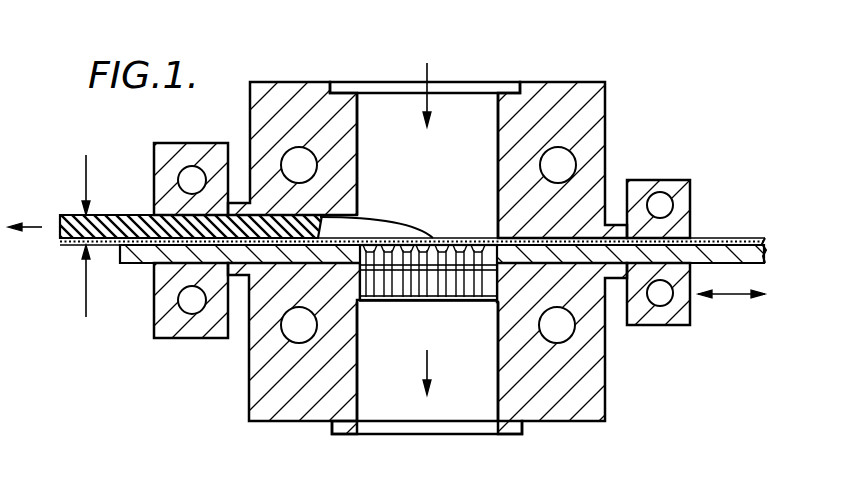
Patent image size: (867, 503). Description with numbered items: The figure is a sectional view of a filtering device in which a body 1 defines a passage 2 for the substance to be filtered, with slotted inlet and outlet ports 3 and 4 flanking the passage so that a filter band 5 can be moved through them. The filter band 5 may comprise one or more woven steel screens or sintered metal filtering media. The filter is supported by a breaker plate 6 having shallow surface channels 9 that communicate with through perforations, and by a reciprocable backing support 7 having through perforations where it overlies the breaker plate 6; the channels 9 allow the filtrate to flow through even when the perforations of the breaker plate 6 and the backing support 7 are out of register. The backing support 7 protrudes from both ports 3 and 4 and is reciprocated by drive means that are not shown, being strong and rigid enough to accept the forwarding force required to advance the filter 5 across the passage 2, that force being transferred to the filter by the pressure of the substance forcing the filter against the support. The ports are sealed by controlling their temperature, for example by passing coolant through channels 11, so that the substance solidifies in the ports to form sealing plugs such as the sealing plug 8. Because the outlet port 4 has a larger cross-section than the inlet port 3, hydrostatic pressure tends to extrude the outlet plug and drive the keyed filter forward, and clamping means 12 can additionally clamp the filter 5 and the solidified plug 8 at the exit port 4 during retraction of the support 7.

The body 1 is at (547, 93).
The passage 2 is at (457, 107).
The inlet port 3 is at (673, 185).
The outlet port 4 is at (156, 177).
The filter band 5 is at (719, 240).
The breaker plate 6 is at (408, 285).
The reciprocable backing support 7 is at (137, 258).
The sealing plug 8 is at (68, 213).
The shallow surface channels 9 is at (460, 291).
The channels 11 is at (192, 178).
The clamping means 12 is at (86, 307).